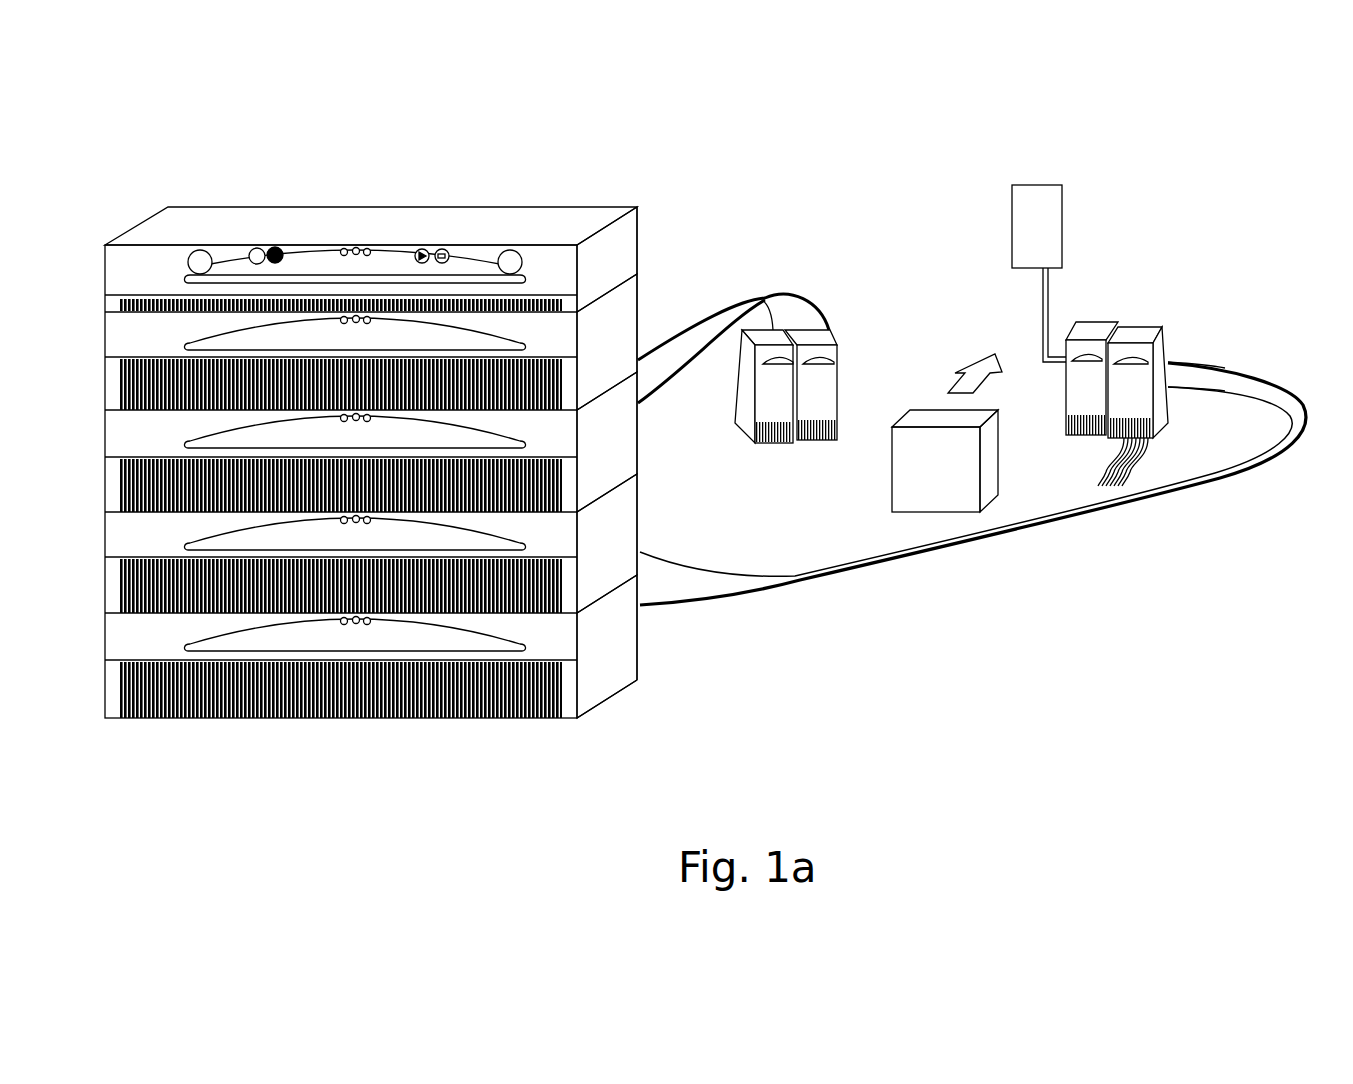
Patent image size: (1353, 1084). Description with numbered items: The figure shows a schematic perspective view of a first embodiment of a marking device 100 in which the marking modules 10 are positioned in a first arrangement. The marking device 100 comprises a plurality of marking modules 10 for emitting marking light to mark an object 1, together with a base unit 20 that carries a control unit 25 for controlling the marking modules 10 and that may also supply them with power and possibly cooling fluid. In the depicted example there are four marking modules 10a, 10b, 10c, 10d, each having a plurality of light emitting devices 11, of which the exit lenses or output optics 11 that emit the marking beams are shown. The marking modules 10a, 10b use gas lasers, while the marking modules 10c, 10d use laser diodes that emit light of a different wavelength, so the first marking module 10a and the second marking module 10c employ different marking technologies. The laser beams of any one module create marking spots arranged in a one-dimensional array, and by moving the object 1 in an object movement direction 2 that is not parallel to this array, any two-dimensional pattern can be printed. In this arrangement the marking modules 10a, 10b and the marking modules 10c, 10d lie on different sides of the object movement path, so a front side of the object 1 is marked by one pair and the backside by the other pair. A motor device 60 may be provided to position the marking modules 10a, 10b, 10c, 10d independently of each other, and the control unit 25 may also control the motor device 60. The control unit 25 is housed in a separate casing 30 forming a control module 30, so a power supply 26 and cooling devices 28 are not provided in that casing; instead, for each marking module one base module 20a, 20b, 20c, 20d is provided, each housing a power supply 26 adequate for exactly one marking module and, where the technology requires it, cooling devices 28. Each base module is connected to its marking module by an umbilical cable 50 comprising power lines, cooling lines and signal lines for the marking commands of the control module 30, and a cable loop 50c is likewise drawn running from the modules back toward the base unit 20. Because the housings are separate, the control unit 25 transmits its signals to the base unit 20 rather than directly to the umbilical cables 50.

The object 1 is at (937, 488).
The object movement direction 2 is at (963, 383).
The marking modules 10 is at (1190, 165).
The first marking module 10a is at (1095, 328).
The marking module 10b is at (1139, 332).
The second marking module 10c is at (756, 385).
The marking module 10d is at (826, 335).
The light emitting devices 11 is at (1123, 474).
The base unit 20 is at (418, 490).
The base module 20a is at (637, 664).
The base module 20b is at (637, 566).
The base module 20c is at (637, 463).
The base module 20d is at (637, 364).
The control unit 25 is at (368, 280).
The power supply 26 is at (354, 484).
The cooling devices 28 is at (368, 483).
The control module 30 is at (371, 259).
The umbilical cable 50 is at (693, 318).
The optical fiber cable loop 50c is at (1247, 376).
The motor device 60 is at (1054, 243).
The marking device 100 is at (1198, 590).